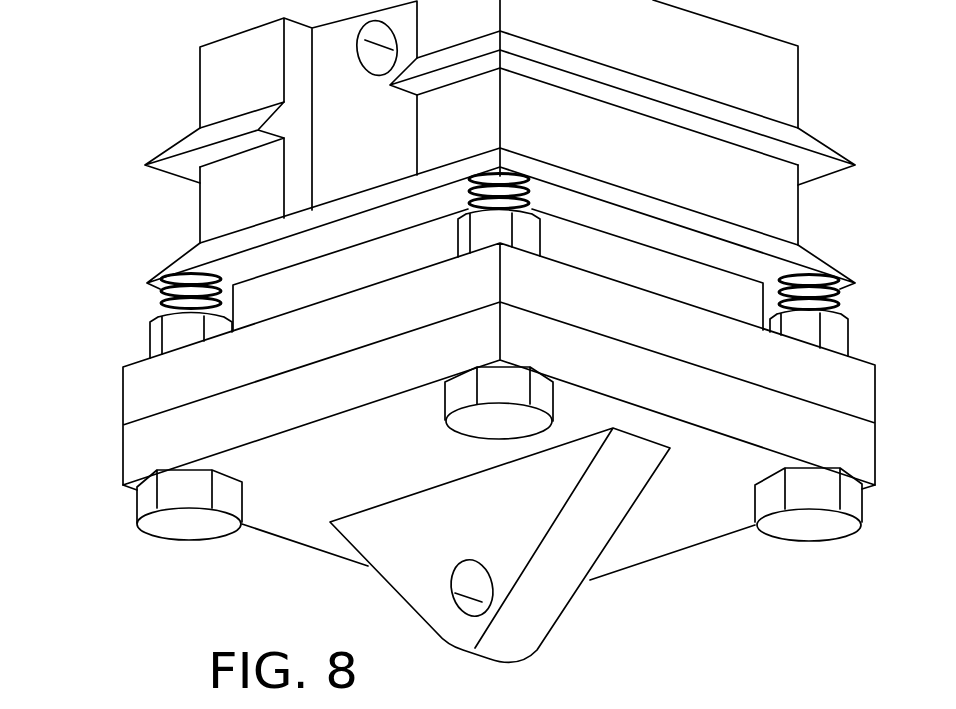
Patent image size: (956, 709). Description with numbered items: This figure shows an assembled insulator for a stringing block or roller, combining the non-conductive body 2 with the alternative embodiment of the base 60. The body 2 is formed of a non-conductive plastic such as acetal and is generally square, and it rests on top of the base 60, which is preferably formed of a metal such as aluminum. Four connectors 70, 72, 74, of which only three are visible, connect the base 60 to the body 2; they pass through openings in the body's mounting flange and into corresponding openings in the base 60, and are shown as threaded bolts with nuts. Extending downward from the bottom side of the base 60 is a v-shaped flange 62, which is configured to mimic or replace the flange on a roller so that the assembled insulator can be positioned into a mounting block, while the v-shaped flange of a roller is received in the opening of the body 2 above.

The body 2 is at (150, 117).
The base 60 is at (93, 468).
The v-shaped flange 62 is at (557, 605).
The connector 70 is at (191, 527).
The connector 72 is at (457, 404).
The connector 74 is at (810, 533).